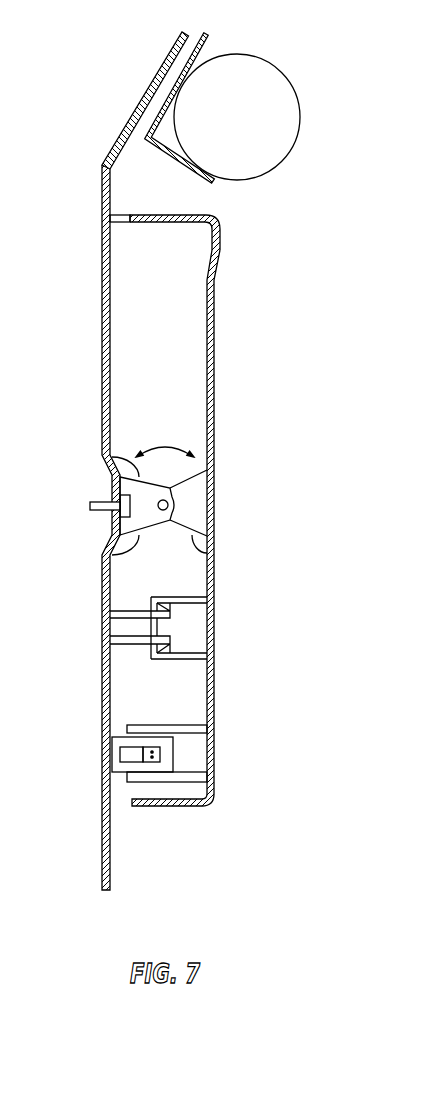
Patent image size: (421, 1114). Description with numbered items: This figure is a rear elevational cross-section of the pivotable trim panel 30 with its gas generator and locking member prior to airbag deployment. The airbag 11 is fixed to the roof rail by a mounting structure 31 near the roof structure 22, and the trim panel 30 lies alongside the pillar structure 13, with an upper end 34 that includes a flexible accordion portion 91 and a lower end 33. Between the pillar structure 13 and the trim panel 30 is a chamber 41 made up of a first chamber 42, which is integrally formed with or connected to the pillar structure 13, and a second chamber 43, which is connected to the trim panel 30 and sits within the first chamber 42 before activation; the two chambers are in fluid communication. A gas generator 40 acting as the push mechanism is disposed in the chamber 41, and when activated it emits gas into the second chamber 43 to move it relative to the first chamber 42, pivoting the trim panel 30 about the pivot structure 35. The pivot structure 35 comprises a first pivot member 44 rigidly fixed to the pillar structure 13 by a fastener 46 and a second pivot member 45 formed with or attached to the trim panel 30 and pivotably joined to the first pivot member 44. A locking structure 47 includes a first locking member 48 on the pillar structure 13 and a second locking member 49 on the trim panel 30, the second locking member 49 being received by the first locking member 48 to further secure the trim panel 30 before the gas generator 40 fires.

The airbag 11 is at (301, 125).
The roof structure 22 is at (133, 110).
The mounting structure 31 is at (208, 43).
The pillar structure 13 is at (102, 313).
The accordion portion 91 is at (120, 215).
The upper end of the trim panel 34 is at (190, 215).
The trim panel 30 is at (215, 422).
The second chamber 43 is at (195, 796).
The lower end of the trim panel 33 is at (182, 806).
The pivot structure 35 is at (102, 457).
The fastener 46 is at (93, 511).
The first pivot member 44 is at (110, 555).
The second pivot member 45 is at (198, 546).
The second locking member 49 is at (187, 597).
The locking structure 47 is at (133, 610).
The first locking member 48 is at (123, 649).
The first chamber 42 is at (127, 734).
The gas generator 40 is at (137, 762).
The chamber 41 is at (155, 783).